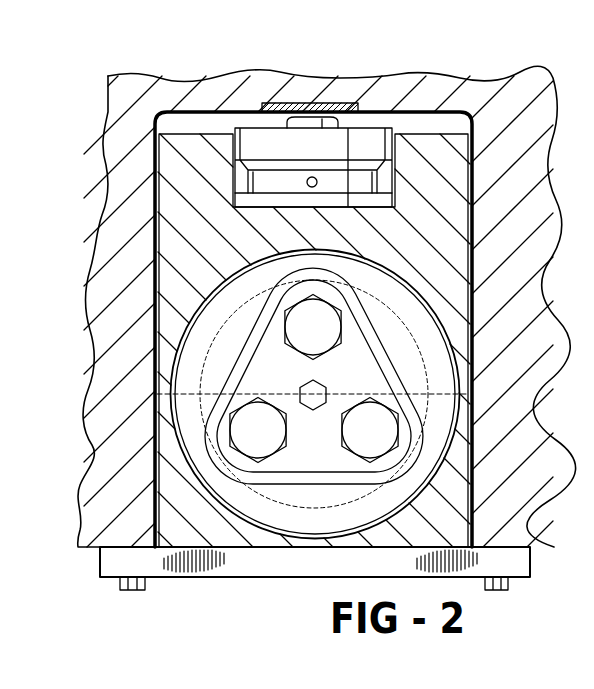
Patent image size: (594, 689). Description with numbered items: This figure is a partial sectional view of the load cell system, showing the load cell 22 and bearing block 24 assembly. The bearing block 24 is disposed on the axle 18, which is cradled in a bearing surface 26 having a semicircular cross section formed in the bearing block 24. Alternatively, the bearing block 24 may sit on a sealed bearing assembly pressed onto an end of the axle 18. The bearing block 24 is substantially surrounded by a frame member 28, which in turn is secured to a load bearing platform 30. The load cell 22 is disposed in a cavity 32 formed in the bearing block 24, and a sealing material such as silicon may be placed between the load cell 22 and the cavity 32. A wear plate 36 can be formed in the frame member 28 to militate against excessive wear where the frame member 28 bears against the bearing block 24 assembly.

The axle 18 is at (195, 478).
The load cell 22 is at (170, 168).
The bearing block 24 is at (253, 180).
The bearing surface 26 is at (214, 292).
The frame member 28 is at (122, 145).
The load bearing platform 30 is at (97, 565).
The cavity 32 is at (400, 207).
The wear plate 36 is at (264, 102).